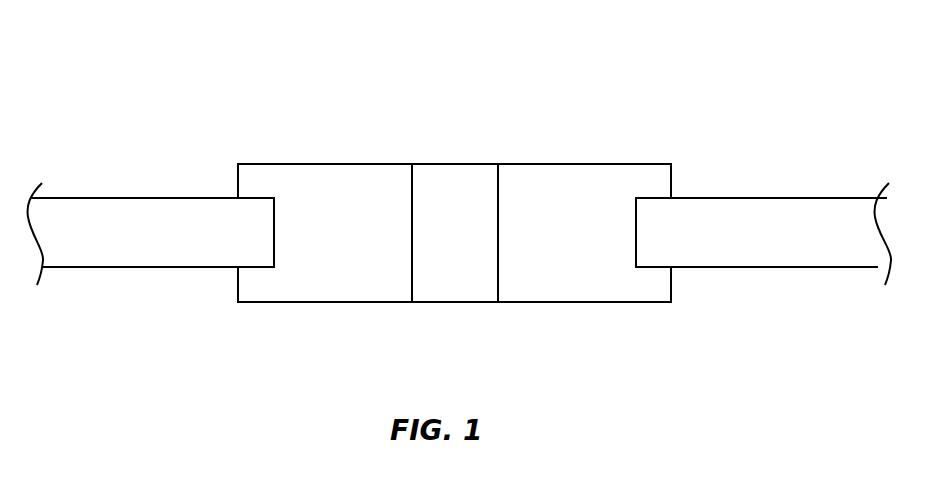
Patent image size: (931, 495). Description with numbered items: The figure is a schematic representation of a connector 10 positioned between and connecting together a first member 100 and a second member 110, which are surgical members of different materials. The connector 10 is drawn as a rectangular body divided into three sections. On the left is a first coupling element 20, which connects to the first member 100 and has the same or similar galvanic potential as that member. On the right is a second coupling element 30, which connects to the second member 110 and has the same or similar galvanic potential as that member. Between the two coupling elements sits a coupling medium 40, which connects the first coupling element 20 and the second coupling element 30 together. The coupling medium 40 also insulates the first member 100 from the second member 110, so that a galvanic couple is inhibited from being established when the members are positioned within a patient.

The connector 10 is at (486, 100).
The first coupling element 20 is at (305, 277).
The second coupling element 30 is at (563, 284).
The coupling medium 40 is at (469, 280).
The first member 100 is at (115, 248).
The second member 110 is at (745, 247).